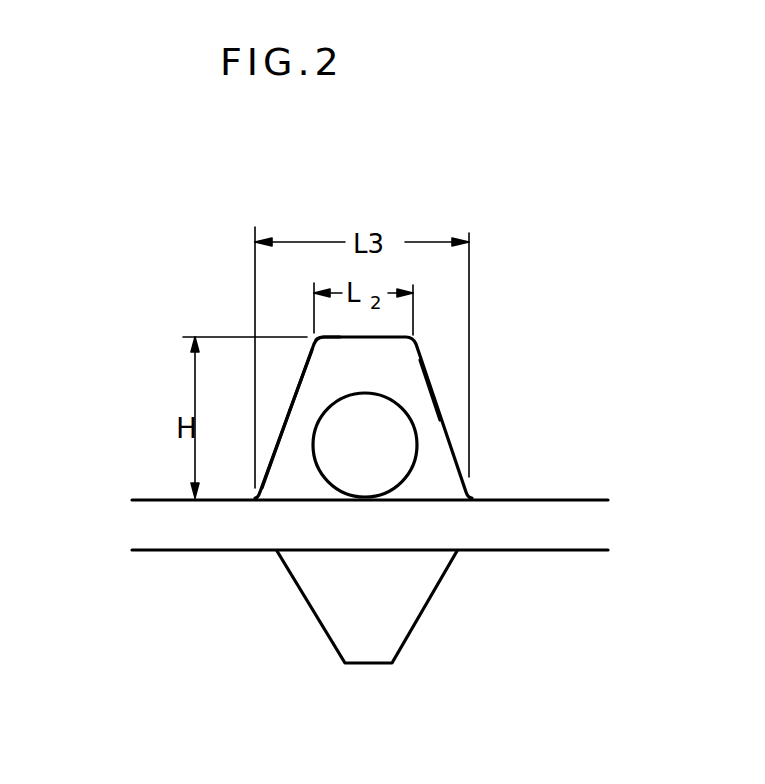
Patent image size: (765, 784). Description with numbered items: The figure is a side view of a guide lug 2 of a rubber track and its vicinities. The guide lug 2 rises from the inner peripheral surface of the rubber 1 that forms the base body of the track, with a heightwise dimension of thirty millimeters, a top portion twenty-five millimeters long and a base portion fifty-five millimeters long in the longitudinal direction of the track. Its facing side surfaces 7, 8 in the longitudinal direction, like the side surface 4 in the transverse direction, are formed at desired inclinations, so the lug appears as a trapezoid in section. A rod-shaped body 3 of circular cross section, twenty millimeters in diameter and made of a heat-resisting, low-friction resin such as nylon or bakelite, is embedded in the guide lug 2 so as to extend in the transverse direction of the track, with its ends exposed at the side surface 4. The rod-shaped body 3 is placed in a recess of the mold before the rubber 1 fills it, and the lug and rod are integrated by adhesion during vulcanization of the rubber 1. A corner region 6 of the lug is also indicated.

The rubber 1 is at (537, 516).
The guide lug 2 is at (427, 334).
The rod-shaped body 3 is at (354, 478).
The side surface 4 is at (288, 449).
The top corner portion 6 is at (318, 337).
The side surface 7 is at (297, 372).
The side surface 8 is at (436, 400).